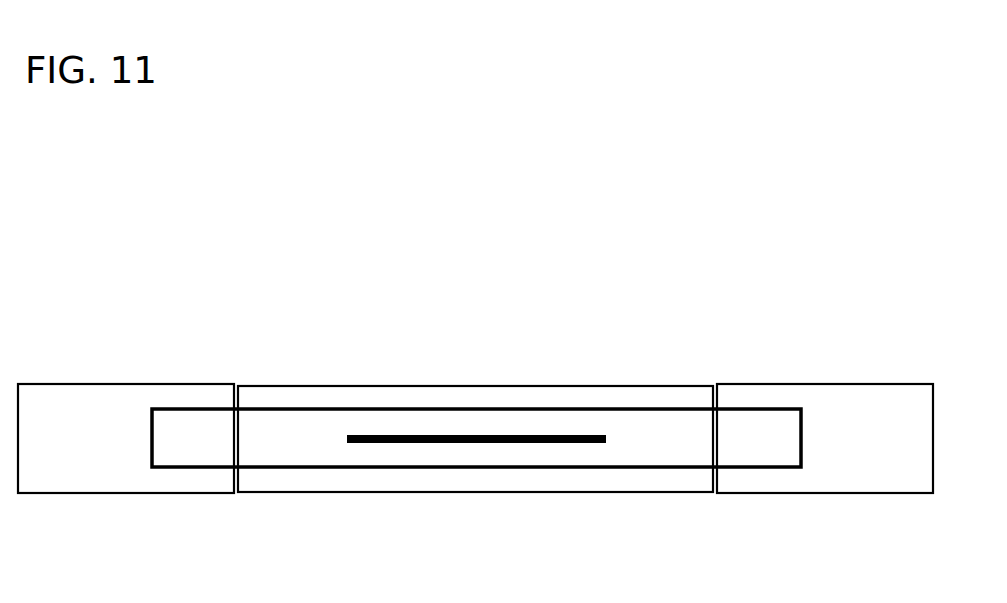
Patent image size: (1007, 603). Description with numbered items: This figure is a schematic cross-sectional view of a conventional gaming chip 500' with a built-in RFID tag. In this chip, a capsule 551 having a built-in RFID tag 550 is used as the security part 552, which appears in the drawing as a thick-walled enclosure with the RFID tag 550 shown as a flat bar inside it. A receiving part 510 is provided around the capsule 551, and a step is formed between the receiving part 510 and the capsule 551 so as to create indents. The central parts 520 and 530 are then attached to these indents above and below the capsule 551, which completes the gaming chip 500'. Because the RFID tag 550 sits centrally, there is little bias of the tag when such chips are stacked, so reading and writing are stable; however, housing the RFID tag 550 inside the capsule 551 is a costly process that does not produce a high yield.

The gaming chip 500' is at (475, 428).
The receiving part 510 is at (122, 384).
The central part 520 is at (335, 386).
The central part 530 is at (390, 493).
The RFID tag 550 is at (503, 435).
The capsule 551 is at (438, 409).
The security part 552 is at (527, 317).